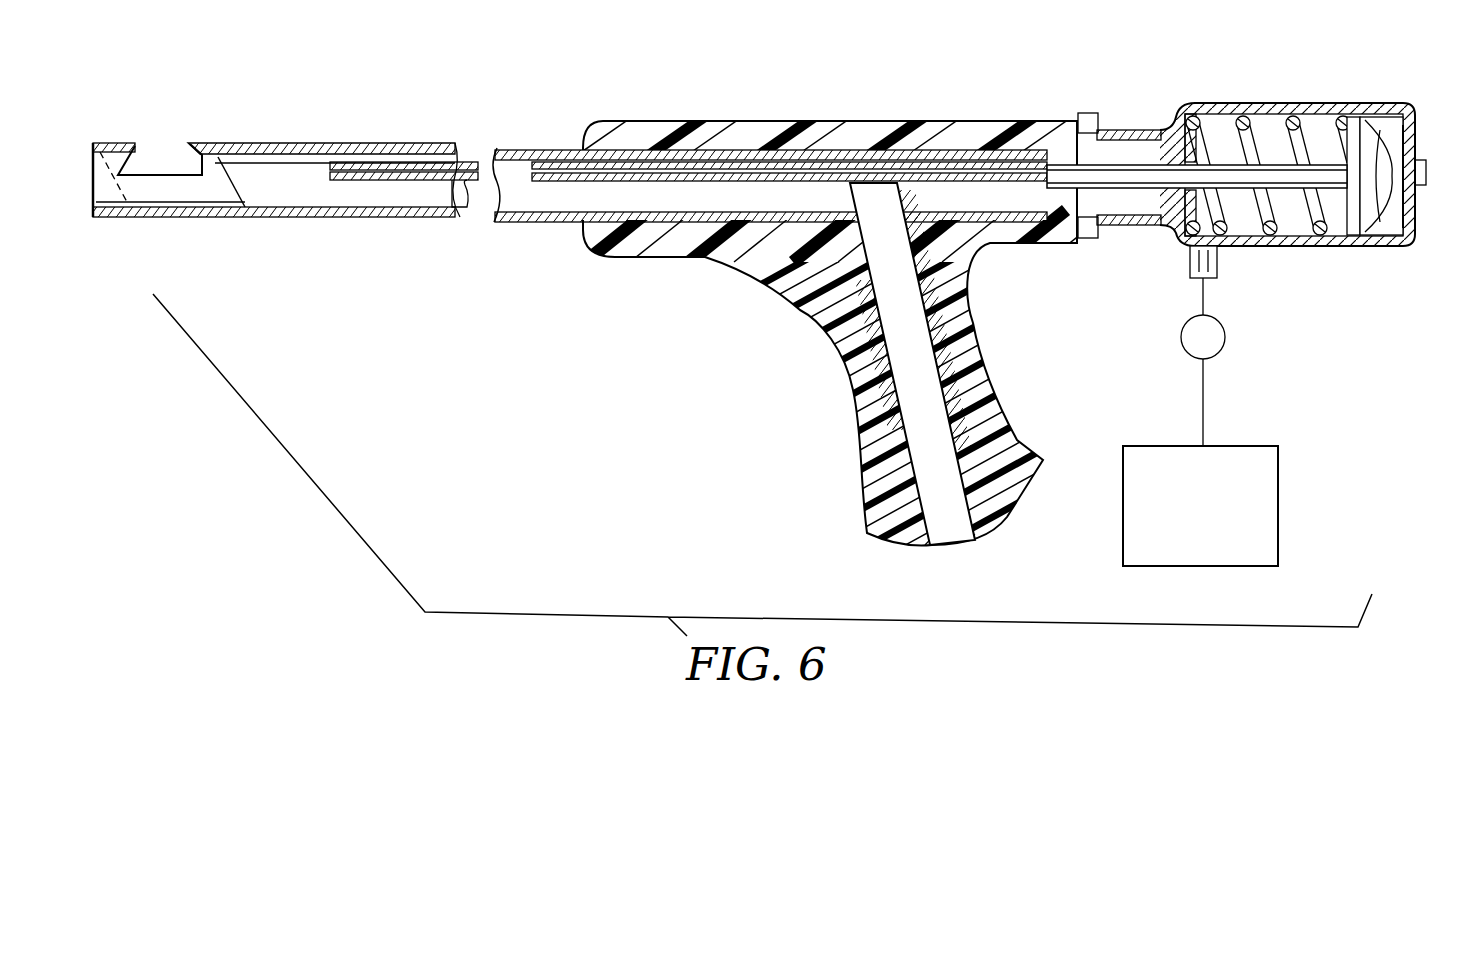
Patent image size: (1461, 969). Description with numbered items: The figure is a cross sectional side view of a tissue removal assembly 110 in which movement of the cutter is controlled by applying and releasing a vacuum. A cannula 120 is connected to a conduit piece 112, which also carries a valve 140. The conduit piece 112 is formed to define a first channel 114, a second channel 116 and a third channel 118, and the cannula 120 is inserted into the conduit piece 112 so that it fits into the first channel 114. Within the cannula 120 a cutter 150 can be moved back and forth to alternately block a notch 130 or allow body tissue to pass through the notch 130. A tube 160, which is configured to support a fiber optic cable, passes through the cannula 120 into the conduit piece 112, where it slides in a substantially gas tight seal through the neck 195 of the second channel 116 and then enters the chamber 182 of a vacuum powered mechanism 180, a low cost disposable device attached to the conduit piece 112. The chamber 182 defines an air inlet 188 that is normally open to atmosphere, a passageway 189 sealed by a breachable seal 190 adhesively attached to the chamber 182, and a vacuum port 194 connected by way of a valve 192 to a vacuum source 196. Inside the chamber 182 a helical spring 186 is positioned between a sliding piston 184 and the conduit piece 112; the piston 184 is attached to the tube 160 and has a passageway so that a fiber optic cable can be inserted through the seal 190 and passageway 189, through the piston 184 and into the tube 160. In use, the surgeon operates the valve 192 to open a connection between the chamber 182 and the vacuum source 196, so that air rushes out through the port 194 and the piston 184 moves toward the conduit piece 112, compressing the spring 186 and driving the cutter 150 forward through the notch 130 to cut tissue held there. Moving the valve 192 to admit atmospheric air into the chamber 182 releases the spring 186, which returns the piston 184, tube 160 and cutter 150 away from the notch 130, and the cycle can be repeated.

The tissue removal assembly 110 is at (765, 339).
The conduit piece 112 is at (888, 111).
The first channel 114 is at (668, 212).
The second channel 116 is at (1138, 176).
The third channel 118 is at (905, 192).
The cannula 120 is at (356, 140).
The notch 130 is at (196, 123).
The valve 140 is at (814, 526).
The cutter 150 is at (286, 218).
The tube 160 is at (464, 168).
The vacuum powered mechanism 180 is at (1298, 176).
The chamber 182 is at (1222, 120).
The sliding piston 184 is at (1375, 195).
The helical spring 186 is at (1268, 232).
The air inlet 188 is at (1360, 128).
The passageway 189 is at (1378, 215).
The breachable seal 190 is at (1420, 168).
The valve 192 is at (1220, 350).
The vacuum port 194 is at (1223, 263).
The neck 195 is at (1038, 148).
The vacuum source 196 is at (1272, 494).